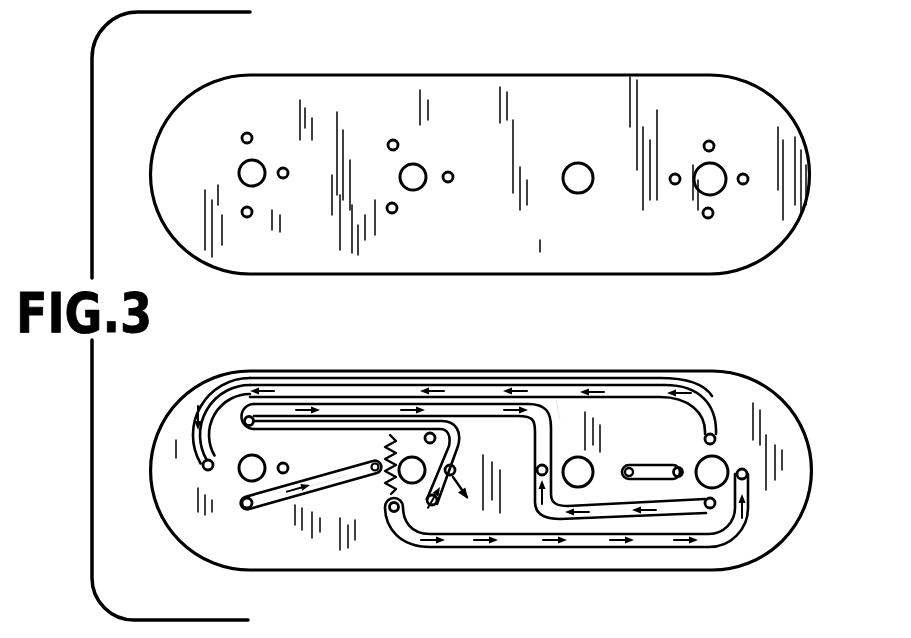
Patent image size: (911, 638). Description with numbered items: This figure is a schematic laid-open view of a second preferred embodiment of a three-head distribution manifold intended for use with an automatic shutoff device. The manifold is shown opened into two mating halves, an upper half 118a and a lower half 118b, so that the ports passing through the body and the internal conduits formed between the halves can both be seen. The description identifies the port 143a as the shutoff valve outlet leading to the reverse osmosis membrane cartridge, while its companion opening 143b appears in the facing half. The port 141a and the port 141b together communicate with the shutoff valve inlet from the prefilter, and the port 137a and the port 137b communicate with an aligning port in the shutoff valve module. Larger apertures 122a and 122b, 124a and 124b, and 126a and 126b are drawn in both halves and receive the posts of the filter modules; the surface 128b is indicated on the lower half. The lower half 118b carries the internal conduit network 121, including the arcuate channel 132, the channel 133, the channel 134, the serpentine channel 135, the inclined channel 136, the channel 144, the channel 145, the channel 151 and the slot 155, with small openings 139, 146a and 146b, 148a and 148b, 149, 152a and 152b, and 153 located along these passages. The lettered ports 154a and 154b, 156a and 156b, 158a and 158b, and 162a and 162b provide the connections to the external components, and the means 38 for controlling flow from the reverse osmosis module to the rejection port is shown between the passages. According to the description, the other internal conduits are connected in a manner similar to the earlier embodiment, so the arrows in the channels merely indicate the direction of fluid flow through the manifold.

The means for controlling the flow 38 is at (372, 503).
The distribution manifold half 118a is at (192, 200).
The distribution manifold half 118b is at (193, 517).
The channel network 121 is at (478, 468).
The hole in upper plate 122a is at (577, 163).
The hole in lower plate 122b is at (583, 458).
The hole in upper plate 124a is at (423, 167).
The hole in lower plate 124b is at (411, 457).
The hole in upper plate 126a is at (238, 172).
The hole in lower plate 126b is at (246, 457).
The plate surface 128b is at (721, 462).
The arcuate channel 132 is at (197, 444).
The channel 133 is at (560, 404).
The lower channel 134 is at (622, 549).
The serpentine channel 135 is at (372, 432).
The inclined channel 136 is at (277, 498).
The port 137a is at (247, 218).
The port 137b is at (249, 414).
The hole 139 is at (203, 466).
The port 141a is at (284, 180).
The port 141b is at (280, 474).
The port 143a is at (243, 134).
The hole in lower plate 143b is at (243, 506).
The F port channel end 144 is at (718, 525).
The channel 145 is at (350, 472).
The hole in upper plate 146a is at (393, 139).
The hole in lower plate 146b is at (394, 513).
The hole in upper plate 148a is at (392, 214).
The hole in lower plate 148b is at (427, 434).
The hole 149 is at (436, 506).
The channel 151 is at (605, 520).
The hole in upper plate 152a is at (450, 183).
The hole in lower plate 152b is at (454, 465).
The hole 153 is at (543, 477).
The F port hole 154a is at (708, 218).
The T port hole 154b is at (716, 432).
The slot 155 is at (628, 465).
The S port hole 156a is at (675, 174).
The S port hole 156b is at (708, 434).
The central port hole 158a is at (714, 146).
The central port hole 158b is at (745, 505).
The A port hole 162a is at (746, 184).
The A port hole 162b is at (748, 479).